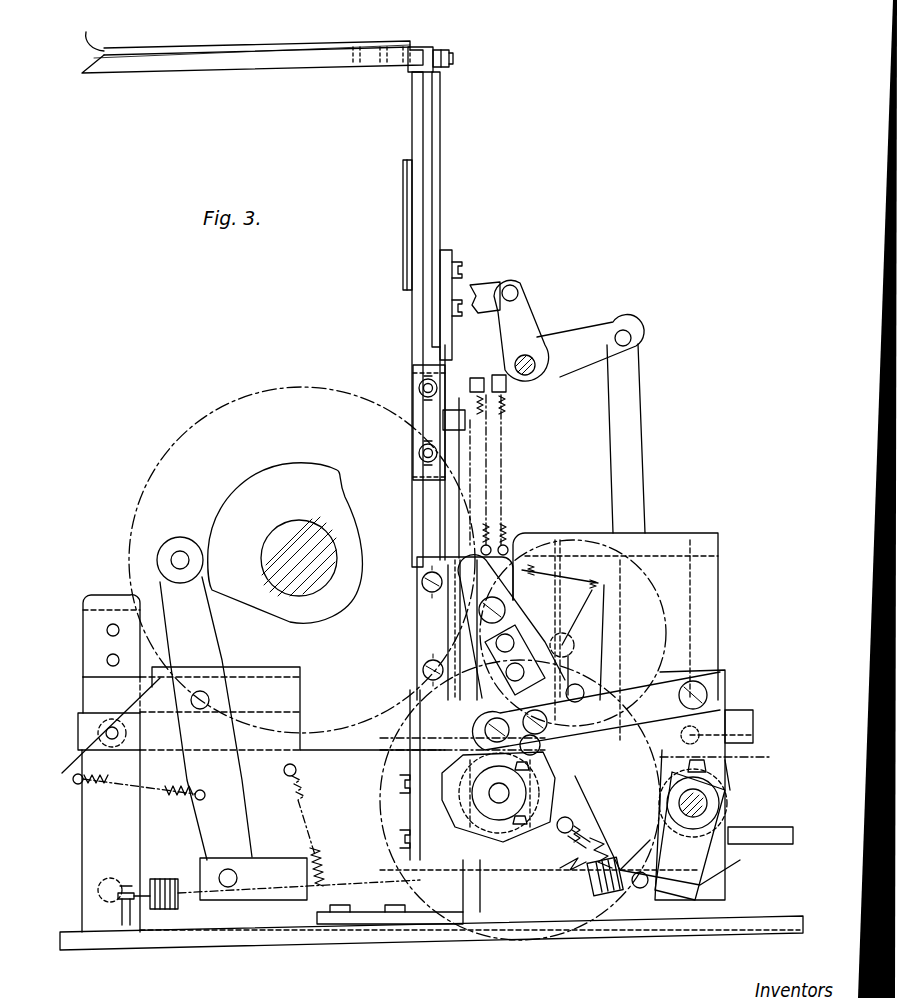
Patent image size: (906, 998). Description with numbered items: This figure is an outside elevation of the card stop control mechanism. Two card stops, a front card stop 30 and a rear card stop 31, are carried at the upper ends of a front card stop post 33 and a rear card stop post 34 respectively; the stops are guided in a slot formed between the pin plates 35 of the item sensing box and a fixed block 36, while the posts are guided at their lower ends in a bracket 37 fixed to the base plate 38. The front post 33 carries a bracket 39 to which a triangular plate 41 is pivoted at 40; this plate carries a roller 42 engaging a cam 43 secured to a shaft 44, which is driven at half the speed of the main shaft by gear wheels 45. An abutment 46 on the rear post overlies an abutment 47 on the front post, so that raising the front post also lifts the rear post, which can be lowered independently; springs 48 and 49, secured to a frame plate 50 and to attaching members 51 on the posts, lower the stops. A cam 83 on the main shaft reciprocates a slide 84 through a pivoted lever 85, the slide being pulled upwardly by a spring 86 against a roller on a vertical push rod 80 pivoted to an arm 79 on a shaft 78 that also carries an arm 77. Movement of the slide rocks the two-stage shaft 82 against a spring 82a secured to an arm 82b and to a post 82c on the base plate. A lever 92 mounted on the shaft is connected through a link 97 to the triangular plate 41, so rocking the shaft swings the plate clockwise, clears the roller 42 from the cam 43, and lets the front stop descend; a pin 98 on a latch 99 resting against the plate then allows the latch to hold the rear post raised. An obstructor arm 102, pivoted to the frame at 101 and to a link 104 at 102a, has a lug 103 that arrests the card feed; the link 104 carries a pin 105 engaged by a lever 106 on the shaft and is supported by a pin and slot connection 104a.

The pin plates 35 is at (295, 57).
The fixed block 36 is at (445, 50).
The front card stop 30 is at (412, 116).
The rear card stop 31 is at (440, 112).
The arm 77 is at (525, 313).
The shaft 78 is at (530, 372).
The arm 79 is at (590, 330).
The vertical push rod 80 is at (635, 438).
The attaching members 51 is at (496, 376).
The abutment 46 is at (455, 420).
The abutment 47 is at (455, 452).
The rear card stop post 34 is at (462, 480).
The spring 48 is at (486, 490).
The spring 49 is at (501, 508).
The gear wheels 45 is at (225, 410).
The cam 83 is at (235, 495).
The front card stop post 33 is at (423, 503).
The bracket 39 is at (420, 557).
The frame plate 50 is at (705, 540).
The lug 103 is at (92, 597).
The pivoted lever 85 is at (168, 592).
The latch 99 is at (610, 592).
The pivot 40 is at (480, 605).
The triangular plate 41 is at (515, 620).
The pin 98 is at (585, 688).
The link 97 is at (630, 688).
The lever 92 is at (728, 672).
The link 104 is at (340, 705).
The obstructor arm 102 is at (95, 678).
The pin 105 is at (755, 733).
The pin and slot connection 104a is at (770, 757).
The lever 106 is at (728, 764).
The roller 42 is at (420, 735).
The cam 43 is at (445, 772).
The shaft 44 is at (437, 808).
The spring 86 is at (302, 793).
The pivot 102a is at (139, 779).
The pivot 101 is at (98, 890).
The post 82c is at (126, 905).
The spring 82a is at (165, 905).
The arm 82b is at (690, 895).
The two-stage shaft 82 is at (710, 803).
The slide 84 is at (768, 840).
The base plate 38 is at (360, 932).
The bracket 37 is at (412, 925).